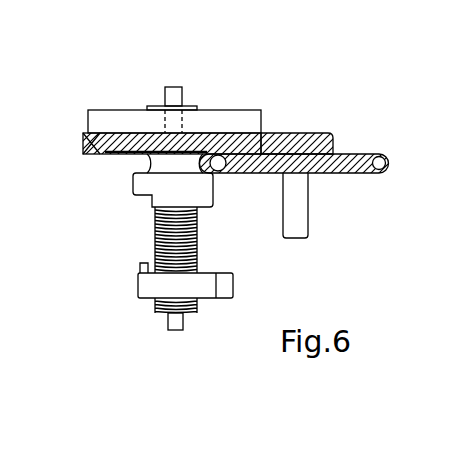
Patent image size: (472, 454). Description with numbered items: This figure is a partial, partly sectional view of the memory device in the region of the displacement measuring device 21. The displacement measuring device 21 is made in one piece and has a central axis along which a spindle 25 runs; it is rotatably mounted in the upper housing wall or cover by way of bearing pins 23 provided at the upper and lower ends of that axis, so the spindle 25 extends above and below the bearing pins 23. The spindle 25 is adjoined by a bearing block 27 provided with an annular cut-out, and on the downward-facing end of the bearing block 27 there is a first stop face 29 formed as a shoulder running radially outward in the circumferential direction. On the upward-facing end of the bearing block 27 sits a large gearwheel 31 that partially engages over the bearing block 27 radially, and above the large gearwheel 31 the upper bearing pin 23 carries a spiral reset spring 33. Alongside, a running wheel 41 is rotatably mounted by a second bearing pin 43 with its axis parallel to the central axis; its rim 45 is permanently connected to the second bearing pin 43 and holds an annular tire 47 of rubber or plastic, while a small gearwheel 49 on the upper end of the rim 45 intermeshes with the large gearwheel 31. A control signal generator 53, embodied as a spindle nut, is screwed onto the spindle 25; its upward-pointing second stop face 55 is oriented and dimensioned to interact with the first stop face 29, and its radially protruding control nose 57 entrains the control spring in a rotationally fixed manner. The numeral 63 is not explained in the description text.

The displacement measuring device 21 is at (127, 163).
The bearing pin 23 is at (173, 97).
The spindle 25 is at (199, 238).
The bearing block 27 is at (147, 186).
The first stop face 29 is at (148, 203).
The large gearwheel 31 is at (100, 145).
The reset spring 33 is at (120, 122).
The running wheel 41 is at (333, 180).
The second bearing pin 43 is at (297, 212).
The rim 45 is at (353, 160).
The annular tire 47 is at (384, 160).
The small gearwheel 49 is at (308, 138).
The control signal generator 53 is at (145, 303).
The second stop face 55 is at (143, 262).
The control nose 57 is at (225, 285).
The housing 63 is at (58, 4).